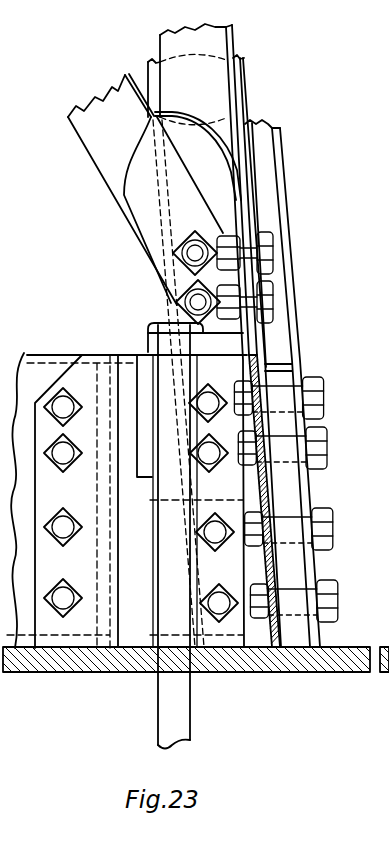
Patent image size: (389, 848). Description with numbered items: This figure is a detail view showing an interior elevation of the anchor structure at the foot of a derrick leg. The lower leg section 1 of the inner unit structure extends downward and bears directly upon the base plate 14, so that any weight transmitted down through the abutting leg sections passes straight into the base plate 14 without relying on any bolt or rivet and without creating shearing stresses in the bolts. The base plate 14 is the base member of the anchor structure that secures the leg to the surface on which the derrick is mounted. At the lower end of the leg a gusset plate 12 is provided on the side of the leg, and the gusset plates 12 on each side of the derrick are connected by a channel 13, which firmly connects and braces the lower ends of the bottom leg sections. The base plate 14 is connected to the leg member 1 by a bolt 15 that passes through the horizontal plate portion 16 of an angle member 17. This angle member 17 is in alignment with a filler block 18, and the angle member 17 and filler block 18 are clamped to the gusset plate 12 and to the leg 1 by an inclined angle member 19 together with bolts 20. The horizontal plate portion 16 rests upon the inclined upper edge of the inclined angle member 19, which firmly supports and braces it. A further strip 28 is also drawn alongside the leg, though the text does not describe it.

The lower leg section 1 is at (250, 153).
The gusset plate 12 is at (262, 498).
The channel 13 is at (43, 372).
The base plate 14 is at (343, 673).
The bolt 15 is at (183, 712).
The horizontal plate portion 16 is at (140, 356).
The angle member 17 is at (138, 393).
The filler block 18 is at (212, 552).
The inclined angle member 19 is at (160, 491).
The bolt 20 is at (310, 496).
The strip 28 is at (282, 182).